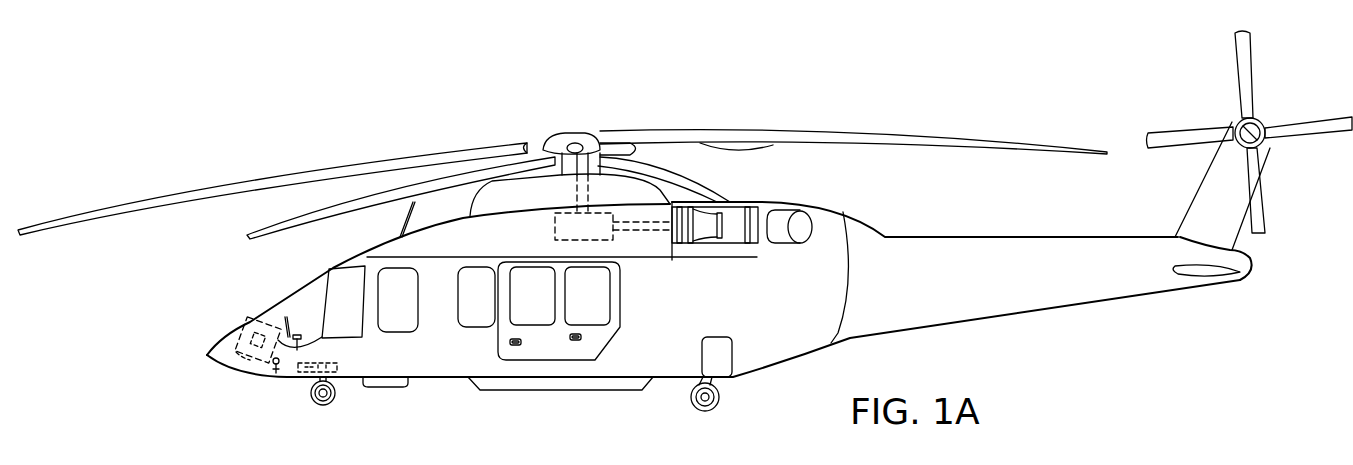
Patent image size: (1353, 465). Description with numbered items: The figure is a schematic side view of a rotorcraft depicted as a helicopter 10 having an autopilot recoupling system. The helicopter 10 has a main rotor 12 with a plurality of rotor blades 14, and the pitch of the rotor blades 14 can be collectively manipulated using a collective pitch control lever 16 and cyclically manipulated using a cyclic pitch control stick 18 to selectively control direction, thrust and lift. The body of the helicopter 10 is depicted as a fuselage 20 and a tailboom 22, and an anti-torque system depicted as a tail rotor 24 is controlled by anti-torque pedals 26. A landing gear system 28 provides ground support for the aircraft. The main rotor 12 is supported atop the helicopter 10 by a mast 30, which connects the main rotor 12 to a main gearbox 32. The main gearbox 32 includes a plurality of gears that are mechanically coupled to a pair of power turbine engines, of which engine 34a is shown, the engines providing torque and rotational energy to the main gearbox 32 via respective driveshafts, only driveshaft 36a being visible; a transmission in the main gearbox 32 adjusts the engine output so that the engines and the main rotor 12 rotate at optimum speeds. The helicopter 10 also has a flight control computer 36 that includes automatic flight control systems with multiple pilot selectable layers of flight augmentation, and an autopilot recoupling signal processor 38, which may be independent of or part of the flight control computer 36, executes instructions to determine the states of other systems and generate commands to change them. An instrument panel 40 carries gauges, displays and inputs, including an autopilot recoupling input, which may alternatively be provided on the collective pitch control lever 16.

The helicopter 10 is at (458, 108).
The main rotor 12 is at (897, 136).
The rotor blades 14 is at (727, 150).
The collective pitch control lever 16 is at (340, 368).
The cyclic pitch control stick 18 is at (300, 337).
The fuselage 20 is at (622, 367).
The tailboom 22 is at (978, 312).
The tail rotor 24 is at (1312, 118).
The anti-torque pedals 26 is at (277, 375).
The landing gear system 28 is at (720, 400).
The mast 30 is at (545, 150).
The main gearbox 32 is at (583, 240).
The engine 34a is at (737, 240).
The flight control computer 36 is at (253, 323).
The driveshaft 36a is at (640, 232).
The autopilot recoupling signal processor 38 is at (242, 357).
The instrument panel 40 is at (293, 318).